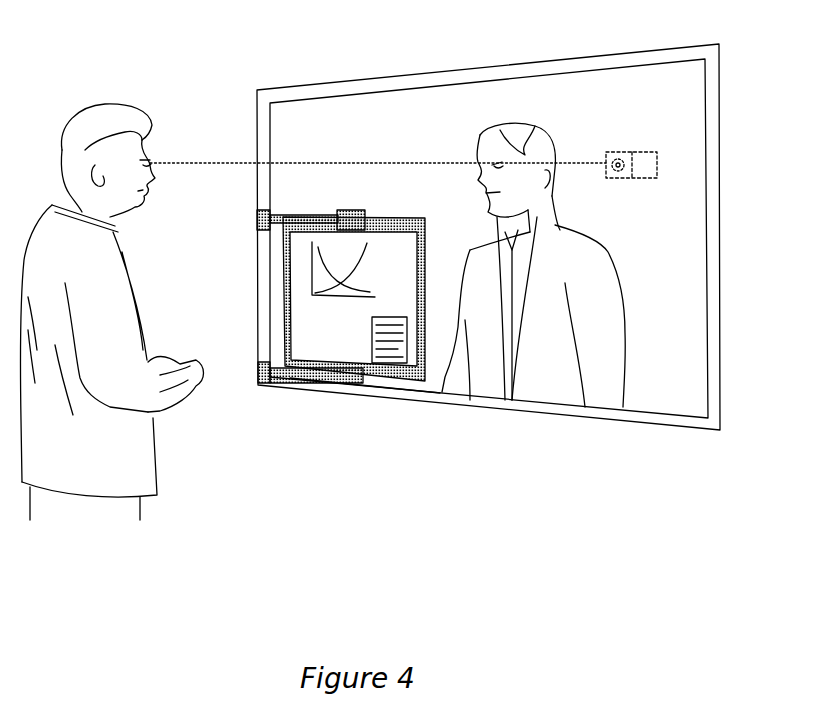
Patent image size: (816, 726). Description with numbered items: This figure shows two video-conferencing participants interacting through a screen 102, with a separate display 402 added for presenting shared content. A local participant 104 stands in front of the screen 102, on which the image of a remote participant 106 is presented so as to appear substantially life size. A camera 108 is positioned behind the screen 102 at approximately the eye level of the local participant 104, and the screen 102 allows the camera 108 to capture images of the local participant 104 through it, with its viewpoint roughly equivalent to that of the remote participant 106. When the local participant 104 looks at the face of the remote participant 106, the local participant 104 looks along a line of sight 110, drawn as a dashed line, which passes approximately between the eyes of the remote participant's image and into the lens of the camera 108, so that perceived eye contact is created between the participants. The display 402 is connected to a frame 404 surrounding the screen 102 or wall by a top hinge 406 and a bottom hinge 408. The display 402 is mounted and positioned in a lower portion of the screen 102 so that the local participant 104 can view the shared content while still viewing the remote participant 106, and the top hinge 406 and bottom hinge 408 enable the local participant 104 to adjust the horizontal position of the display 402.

The screen 102 is at (683, 400).
The local participant 104 is at (157, 485).
The remote participant 106 is at (612, 266).
The camera 108 is at (657, 160).
The line of sight 110 is at (203, 163).
The display 402 is at (283, 285).
The frame 404 is at (413, 395).
The top hinge 406 is at (310, 213).
The bottom hinge 408 is at (313, 383).